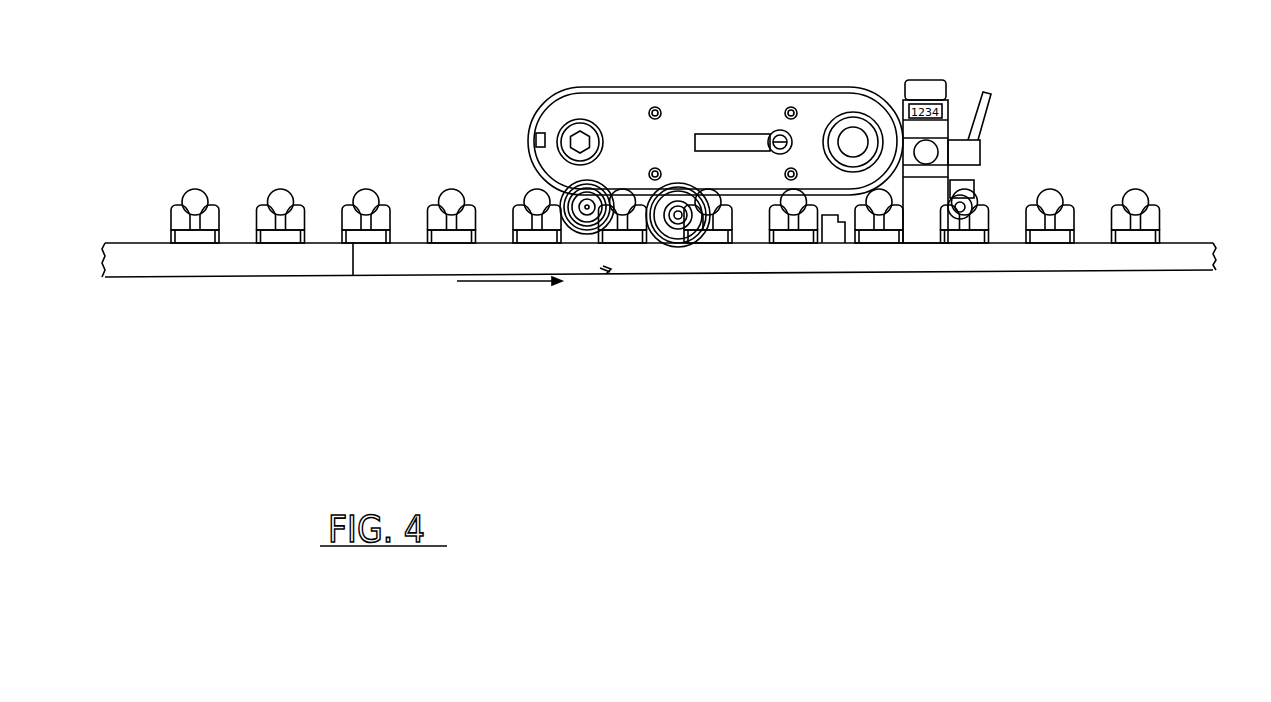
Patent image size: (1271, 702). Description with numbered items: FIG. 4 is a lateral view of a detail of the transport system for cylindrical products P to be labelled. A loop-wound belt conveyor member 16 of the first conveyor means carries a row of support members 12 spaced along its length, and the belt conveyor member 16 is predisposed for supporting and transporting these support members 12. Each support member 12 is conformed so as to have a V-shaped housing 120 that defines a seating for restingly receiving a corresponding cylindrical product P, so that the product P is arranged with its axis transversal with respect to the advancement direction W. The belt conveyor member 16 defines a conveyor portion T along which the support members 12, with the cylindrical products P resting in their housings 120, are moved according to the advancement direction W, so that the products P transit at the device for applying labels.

The support member 12 is at (175, 212).
The V-shaped housing 120 is at (217, 207).
The belt conveyor member 16 is at (137, 262).
The cylindrical product P is at (197, 198).
The advancement direction W is at (509, 301).
The conveyor portion T is at (605, 270).